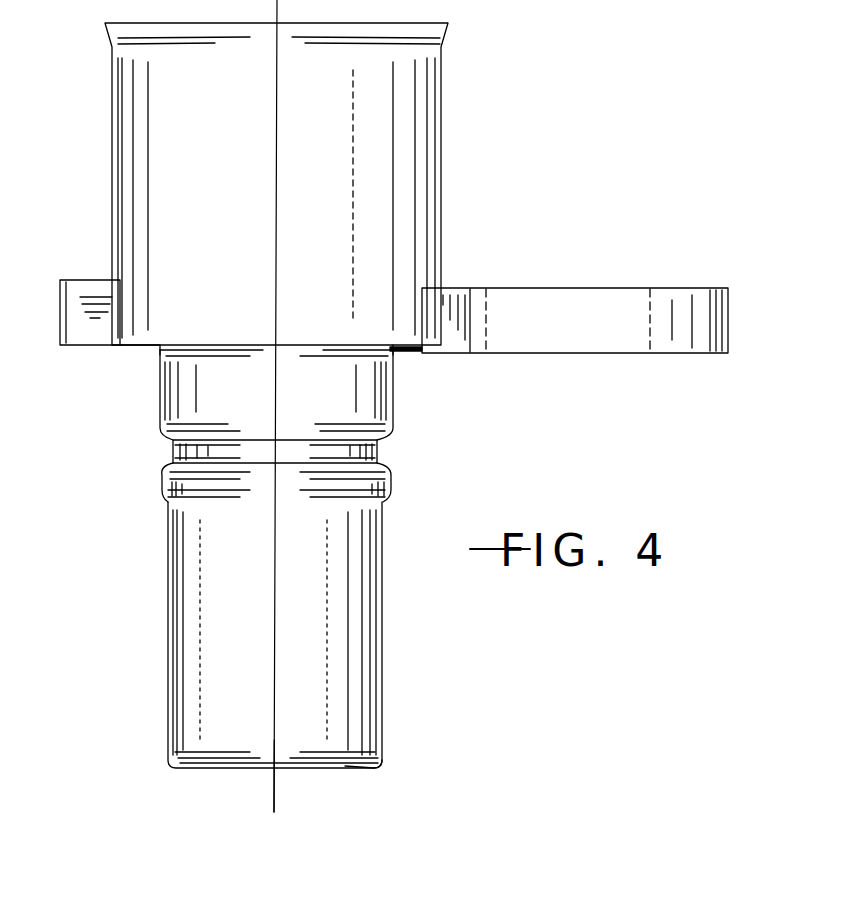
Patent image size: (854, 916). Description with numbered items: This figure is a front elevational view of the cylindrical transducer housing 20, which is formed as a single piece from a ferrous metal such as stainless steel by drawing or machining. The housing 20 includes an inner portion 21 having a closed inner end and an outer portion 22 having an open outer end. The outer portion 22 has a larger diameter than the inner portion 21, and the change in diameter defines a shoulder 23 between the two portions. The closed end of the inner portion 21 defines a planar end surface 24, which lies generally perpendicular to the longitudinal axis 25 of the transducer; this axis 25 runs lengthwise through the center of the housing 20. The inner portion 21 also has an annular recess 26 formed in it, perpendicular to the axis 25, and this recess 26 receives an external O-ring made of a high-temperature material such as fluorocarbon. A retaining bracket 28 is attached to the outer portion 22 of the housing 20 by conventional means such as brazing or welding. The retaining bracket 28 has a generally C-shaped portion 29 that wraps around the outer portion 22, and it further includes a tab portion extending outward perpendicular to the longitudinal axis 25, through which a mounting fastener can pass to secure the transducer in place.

The housing 20 is at (460, 40).
The inner portion 21 is at (182, 622).
The outer portion 22 is at (415, 131).
The shoulder 23 is at (410, 354).
The planar end surface 24 is at (340, 769).
The longitudinal axis 25 is at (272, 788).
The annular recess 26 is at (393, 453).
The retaining bracket 28 is at (599, 336).
The C-shaped portion 29 is at (78, 343).